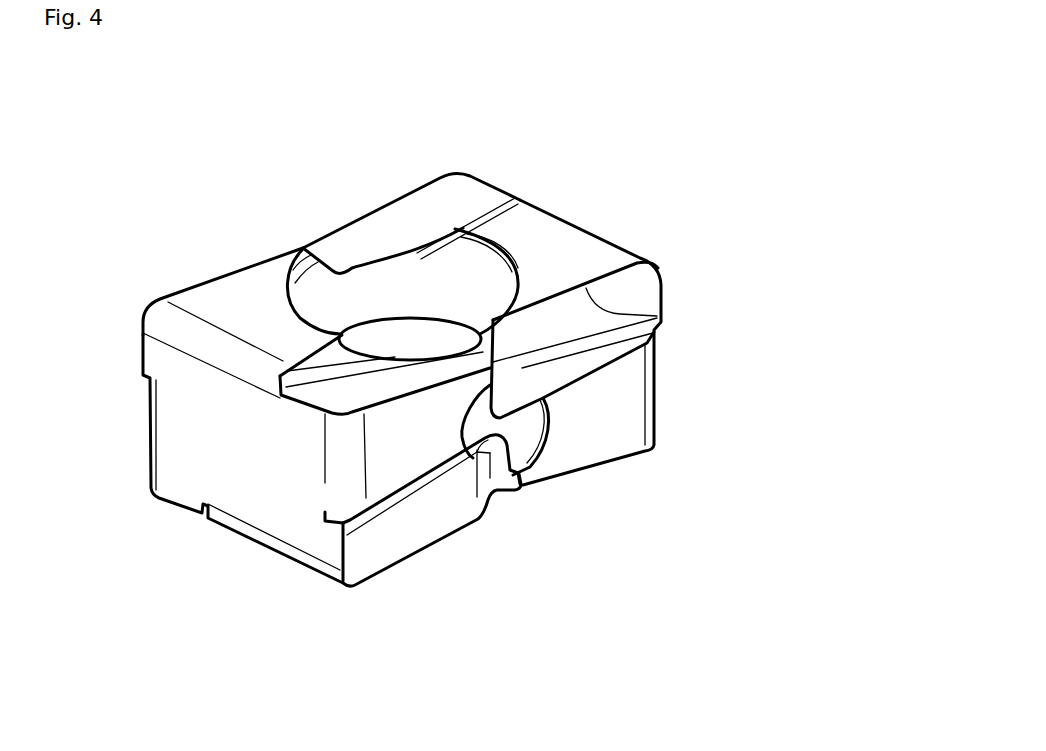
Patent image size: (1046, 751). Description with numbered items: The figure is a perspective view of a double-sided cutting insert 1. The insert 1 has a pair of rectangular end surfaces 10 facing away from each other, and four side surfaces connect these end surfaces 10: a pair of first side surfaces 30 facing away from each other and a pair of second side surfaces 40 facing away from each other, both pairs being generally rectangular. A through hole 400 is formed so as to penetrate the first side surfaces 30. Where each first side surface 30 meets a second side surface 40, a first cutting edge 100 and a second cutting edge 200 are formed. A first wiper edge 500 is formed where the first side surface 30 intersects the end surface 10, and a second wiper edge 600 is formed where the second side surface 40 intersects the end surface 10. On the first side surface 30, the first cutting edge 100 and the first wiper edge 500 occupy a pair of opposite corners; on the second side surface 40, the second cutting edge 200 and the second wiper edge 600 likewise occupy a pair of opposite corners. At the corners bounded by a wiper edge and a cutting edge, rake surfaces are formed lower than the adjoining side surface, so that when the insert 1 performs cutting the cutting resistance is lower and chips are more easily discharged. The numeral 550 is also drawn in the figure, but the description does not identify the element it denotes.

The double-sided cutting insert 1 is at (603, 109).
The end surface 10 is at (262, 506).
The first side surface 30 is at (583, 247).
The second side surface 40 is at (578, 435).
The first cutting edge 100 is at (387, 205).
The second cutting edge 200 is at (254, 265).
The through hole 400 is at (382, 278).
The first wiper edge 500 is at (500, 183).
The side flange 550 is at (185, 342).
The second wiper edge 600 is at (338, 555).